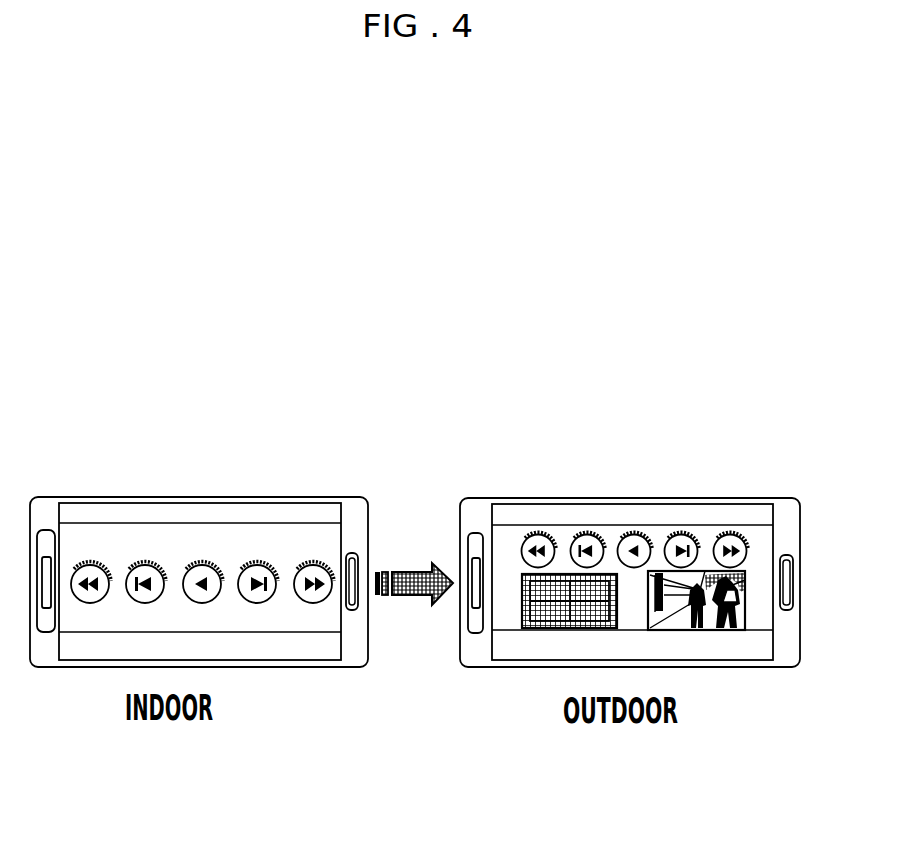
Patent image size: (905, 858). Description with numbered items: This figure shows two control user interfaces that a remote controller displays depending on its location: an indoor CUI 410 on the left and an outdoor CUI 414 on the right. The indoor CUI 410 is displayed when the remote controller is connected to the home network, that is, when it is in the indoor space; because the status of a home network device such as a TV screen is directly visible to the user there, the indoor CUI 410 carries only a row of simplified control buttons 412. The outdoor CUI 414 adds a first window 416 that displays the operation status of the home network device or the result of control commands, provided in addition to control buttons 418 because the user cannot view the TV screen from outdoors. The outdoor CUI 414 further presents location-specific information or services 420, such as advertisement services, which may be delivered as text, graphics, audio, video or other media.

The indoor CUI 410 is at (97, 473).
The simplified control buttons 412 is at (213, 552).
The outdoor CUI 414 is at (510, 473).
The first window 416 is at (547, 625).
The control buttons 418 is at (613, 530).
The location-specific information or services 420 is at (703, 573).